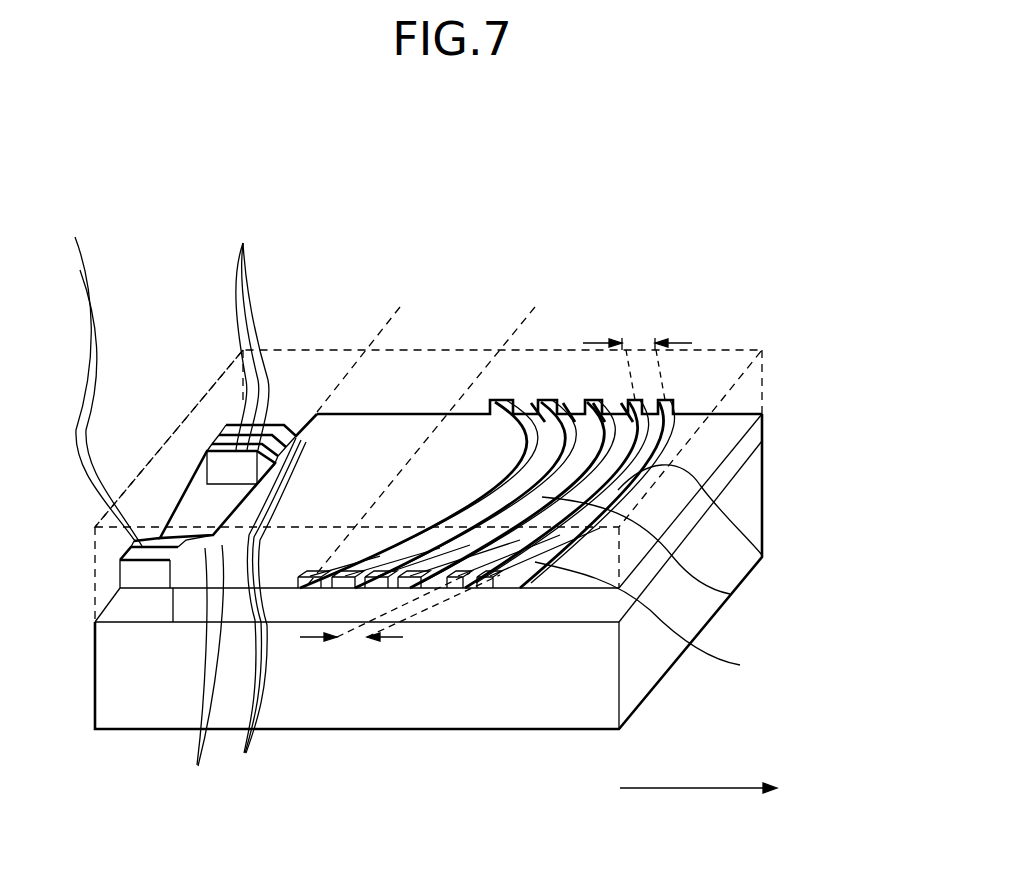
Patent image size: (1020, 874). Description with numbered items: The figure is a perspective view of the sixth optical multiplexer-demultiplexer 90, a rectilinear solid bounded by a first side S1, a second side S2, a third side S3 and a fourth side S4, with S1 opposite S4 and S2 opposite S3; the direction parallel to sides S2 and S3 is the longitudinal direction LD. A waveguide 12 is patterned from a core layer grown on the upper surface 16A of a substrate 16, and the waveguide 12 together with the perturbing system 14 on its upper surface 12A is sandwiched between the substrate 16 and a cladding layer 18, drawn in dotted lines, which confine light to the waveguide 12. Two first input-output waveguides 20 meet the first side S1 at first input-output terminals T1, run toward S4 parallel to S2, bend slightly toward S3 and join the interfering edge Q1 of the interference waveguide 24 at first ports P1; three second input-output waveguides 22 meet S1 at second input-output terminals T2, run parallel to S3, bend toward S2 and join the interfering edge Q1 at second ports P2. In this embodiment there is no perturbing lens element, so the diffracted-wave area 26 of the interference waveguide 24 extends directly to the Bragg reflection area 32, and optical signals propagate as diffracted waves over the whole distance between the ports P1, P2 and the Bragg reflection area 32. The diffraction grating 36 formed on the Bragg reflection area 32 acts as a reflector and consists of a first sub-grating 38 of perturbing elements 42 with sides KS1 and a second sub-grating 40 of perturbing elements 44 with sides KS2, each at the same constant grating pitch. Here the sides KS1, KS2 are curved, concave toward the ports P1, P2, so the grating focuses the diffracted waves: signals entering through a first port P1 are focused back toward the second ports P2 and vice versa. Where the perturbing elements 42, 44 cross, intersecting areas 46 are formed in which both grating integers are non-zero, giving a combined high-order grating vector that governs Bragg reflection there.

The waveguide 12 is at (40, 195).
The perturbing system 14 is at (583, 798).
The substrate 16 is at (762, 473).
The upper surface of the substrate 16A is at (205, 498).
The cladding layer 18 is at (764, 402).
The first input-output waveguides 20 is at (101, 378).
The second input-output waveguides 22 is at (249, 330).
The interference waveguide 24 is at (718, 252).
The diffracted-wave area 26 is at (400, 302).
The Bragg reflection area 32 is at (535, 302).
The diffraction grating 36 is at (455, 552).
The first sub-grating 38 is at (455, 562).
The second sub-grating 40 is at (505, 562).
The perturbing elements 42 is at (443, 491).
The perturbing elements 44 is at (548, 491).
The intersecting areas 46 is at (730, 594).
The sixth optical multiplexer-demultiplexer 90 is at (742, 179).
The upper surface of the waveguide 12A is at (722, 432).
The first input-output terminals T1 is at (140, 546).
The second input-output terminals T2 is at (230, 438).
The first ports P1 is at (205, 675).
The second ports P2 is at (264, 613).
The interfering edge Q1 is at (306, 414).
The first side S1 is at (209, 397).
The second side S2 is at (116, 707).
The third side S3 is at (339, 352).
The fourth side S4 is at (762, 511).
The sides of perturbing elements 42 KS1 is at (762, 555).
The sides of perturbing elements 44 KS2 is at (740, 665).
The longitudinal direction LD is at (698, 803).